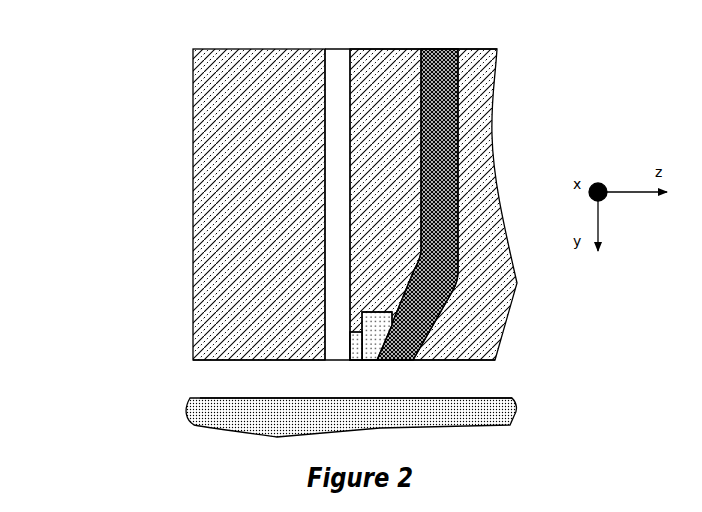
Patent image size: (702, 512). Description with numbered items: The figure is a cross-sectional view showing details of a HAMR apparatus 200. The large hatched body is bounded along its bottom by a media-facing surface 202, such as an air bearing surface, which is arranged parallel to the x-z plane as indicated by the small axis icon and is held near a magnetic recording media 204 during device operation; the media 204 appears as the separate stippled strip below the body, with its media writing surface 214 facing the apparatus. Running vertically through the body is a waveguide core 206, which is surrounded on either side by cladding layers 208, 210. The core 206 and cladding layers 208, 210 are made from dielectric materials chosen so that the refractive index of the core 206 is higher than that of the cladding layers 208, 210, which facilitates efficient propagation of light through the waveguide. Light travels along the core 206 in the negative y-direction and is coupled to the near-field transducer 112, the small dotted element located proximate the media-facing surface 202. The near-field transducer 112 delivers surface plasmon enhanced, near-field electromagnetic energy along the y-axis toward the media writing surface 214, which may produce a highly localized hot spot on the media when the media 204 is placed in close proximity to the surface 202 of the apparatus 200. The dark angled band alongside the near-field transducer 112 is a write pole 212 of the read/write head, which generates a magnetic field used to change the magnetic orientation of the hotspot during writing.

The HAMR apparatus 200 is at (117, 44).
The media-facing surface 202 is at (206, 360).
The magnetic recording media 204 is at (511, 403).
The waveguide core 206 is at (345, 183).
The cladding layer 208 is at (201, 82).
The cladding layer 210 is at (379, 49).
The write pole 212 is at (440, 49).
The media writing surface 214 is at (476, 398).
The near-field transducer 112 is at (357, 360).